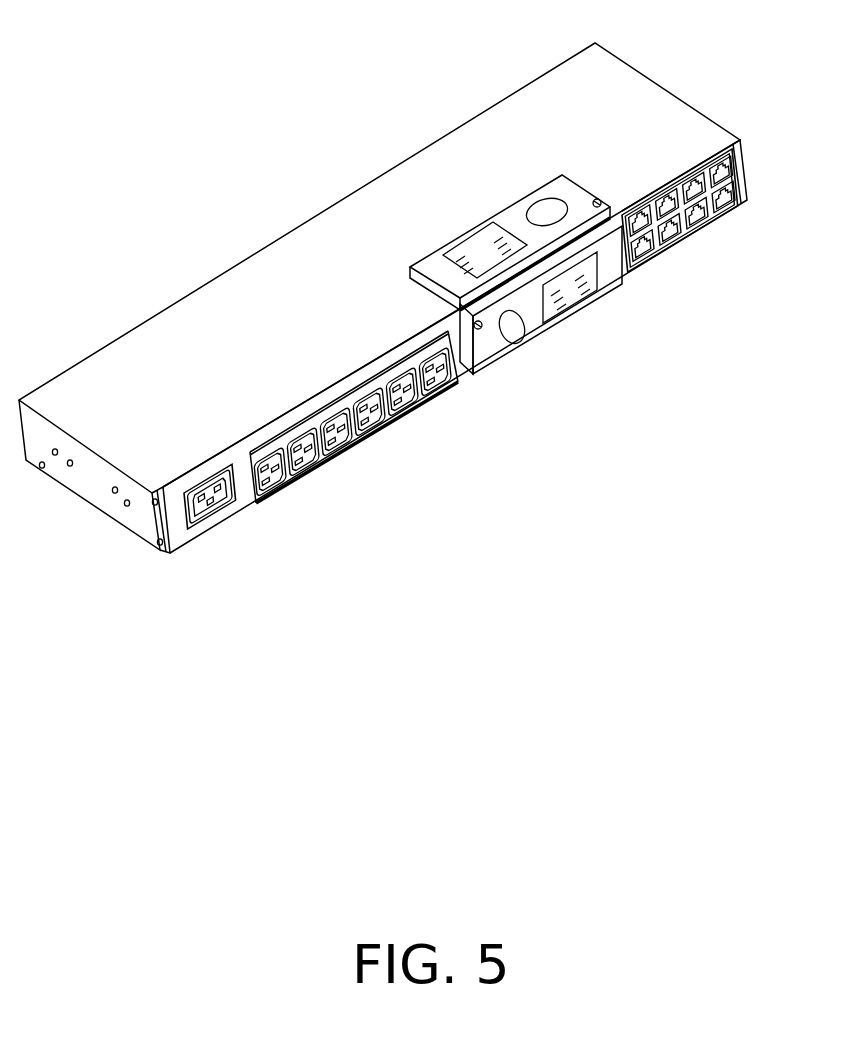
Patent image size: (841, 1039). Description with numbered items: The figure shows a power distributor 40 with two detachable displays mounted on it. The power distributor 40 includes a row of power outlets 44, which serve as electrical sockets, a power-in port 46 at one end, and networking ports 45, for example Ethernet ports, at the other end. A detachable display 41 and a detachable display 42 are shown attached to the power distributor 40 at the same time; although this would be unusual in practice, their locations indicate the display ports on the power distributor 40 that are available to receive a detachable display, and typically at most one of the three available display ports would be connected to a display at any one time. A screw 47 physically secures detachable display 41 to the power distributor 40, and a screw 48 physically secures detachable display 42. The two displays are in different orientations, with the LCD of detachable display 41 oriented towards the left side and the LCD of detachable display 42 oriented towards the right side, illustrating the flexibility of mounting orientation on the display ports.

The power distributor 40 is at (678, 160).
The detachable display 41 is at (567, 187).
The detachable display 42 is at (520, 350).
The power outlets 44 is at (348, 435).
The networking ports 45 is at (682, 233).
The power-in port 46 is at (210, 500).
The screw 47 is at (600, 205).
The screw 48 is at (479, 330).